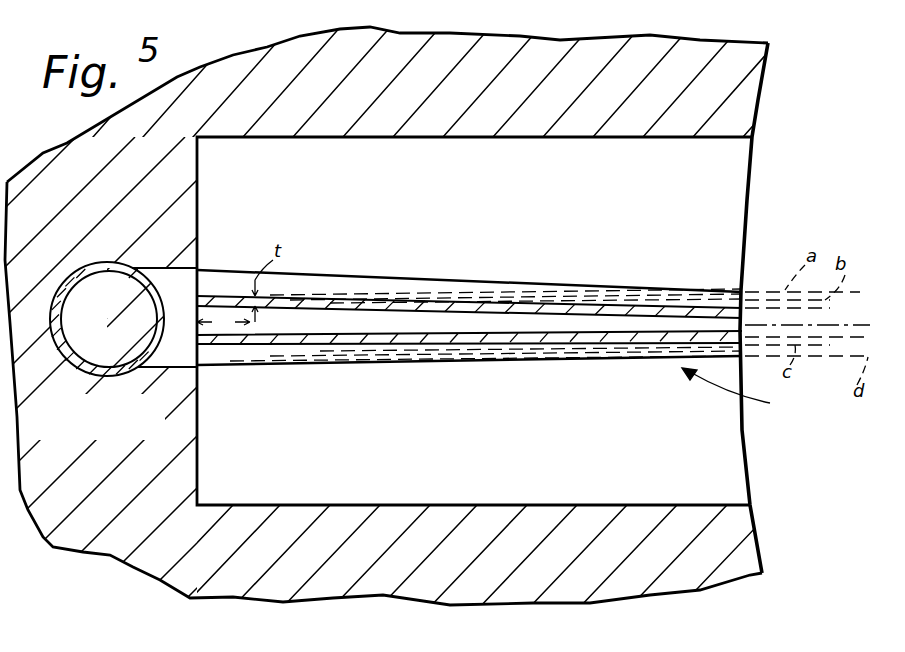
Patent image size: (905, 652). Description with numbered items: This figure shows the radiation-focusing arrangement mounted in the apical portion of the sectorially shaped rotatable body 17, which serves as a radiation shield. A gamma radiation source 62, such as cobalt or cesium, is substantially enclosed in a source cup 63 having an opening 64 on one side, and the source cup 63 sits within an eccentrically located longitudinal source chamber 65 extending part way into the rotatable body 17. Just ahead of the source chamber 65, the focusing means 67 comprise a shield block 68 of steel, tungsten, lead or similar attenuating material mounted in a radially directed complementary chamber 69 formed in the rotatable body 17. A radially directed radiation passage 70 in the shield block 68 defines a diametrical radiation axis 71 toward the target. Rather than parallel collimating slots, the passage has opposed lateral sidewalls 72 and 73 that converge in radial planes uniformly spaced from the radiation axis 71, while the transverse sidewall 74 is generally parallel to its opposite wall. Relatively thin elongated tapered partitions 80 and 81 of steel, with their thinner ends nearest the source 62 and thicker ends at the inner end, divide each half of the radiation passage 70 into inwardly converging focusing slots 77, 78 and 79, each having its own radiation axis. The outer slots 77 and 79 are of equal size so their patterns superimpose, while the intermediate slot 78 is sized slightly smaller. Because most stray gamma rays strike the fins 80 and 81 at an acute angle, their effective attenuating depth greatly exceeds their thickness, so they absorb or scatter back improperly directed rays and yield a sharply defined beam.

The rotatable body 17 is at (503, 85).
The radiation source 62 is at (117, 331).
The source cup 63 is at (112, 378).
The opening 64 is at (158, 370).
The longitudinal source chamber 65 is at (83, 372).
The focusing means 67 is at (740, 392).
The shield block 68 is at (752, 478).
The radially directed chamber 69 is at (553, 507).
The radiation passage 70 is at (742, 296).
The radiation axis 71 is at (840, 330).
The lateral sidewall 72 is at (433, 283).
The lateral sidewall 73 is at (450, 358).
The transverse sidewall 74 is at (469, 371).
The focusing slot 77 is at (273, 290).
The intermediate focusing slot 78 is at (260, 321).
The focusing slot 79 is at (247, 370).
The tapered partition 80 is at (218, 296).
The tapered partition 81 is at (387, 347).